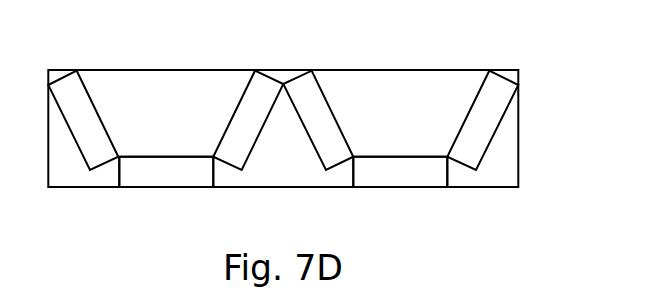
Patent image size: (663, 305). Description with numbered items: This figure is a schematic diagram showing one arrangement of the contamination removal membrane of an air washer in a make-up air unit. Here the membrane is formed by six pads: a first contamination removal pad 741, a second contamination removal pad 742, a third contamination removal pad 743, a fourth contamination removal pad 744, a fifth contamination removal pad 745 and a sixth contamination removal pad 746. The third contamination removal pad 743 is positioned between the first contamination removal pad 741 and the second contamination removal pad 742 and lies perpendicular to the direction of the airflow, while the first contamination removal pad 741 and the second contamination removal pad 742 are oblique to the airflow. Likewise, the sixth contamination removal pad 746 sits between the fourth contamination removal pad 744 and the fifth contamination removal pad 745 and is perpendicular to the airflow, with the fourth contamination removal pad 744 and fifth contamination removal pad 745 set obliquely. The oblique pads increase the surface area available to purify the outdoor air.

The first contamination removal pad 741 is at (85, 112).
The second contamination removal pad 742 is at (248, 112).
The third contamination removal pad 743 is at (157, 168).
The fourth contamination removal pad 744 is at (320, 112).
The fifth contamination removal pad 745 is at (483, 112).
The sixth contamination removal pad 746 is at (410, 168).